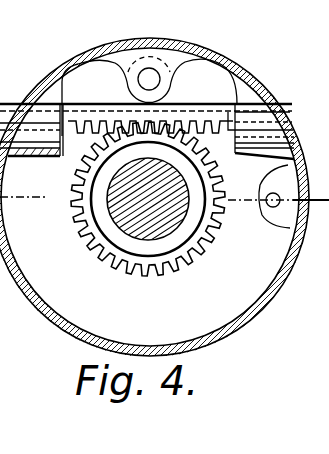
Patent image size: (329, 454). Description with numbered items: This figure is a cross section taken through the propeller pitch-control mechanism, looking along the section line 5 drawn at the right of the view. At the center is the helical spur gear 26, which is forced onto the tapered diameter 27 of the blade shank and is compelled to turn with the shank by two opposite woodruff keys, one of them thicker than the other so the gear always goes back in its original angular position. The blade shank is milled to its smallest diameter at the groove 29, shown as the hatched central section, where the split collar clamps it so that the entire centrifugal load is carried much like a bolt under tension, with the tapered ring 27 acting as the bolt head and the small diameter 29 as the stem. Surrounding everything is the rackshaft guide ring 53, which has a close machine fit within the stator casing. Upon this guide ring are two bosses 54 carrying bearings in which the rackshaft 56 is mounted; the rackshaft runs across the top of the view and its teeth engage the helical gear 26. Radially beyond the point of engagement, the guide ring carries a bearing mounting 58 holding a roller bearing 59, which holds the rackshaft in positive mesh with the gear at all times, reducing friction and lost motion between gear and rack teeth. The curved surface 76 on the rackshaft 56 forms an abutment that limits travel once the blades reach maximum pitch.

The section line 5 is at (317, 210).
The helical spur gear 26 is at (80, 215).
The tapered diameter 27 is at (163, 243).
The smallest diameter 29 is at (174, 214).
The rackshaft guide ring 53 is at (262, 299).
The bosses 54 is at (40, 145).
The rackshaft 56 is at (80, 113).
The bearing mounting 58 is at (188, 55).
The roller bearing 59 is at (170, 102).
The curved surface 76 is at (84, 126).